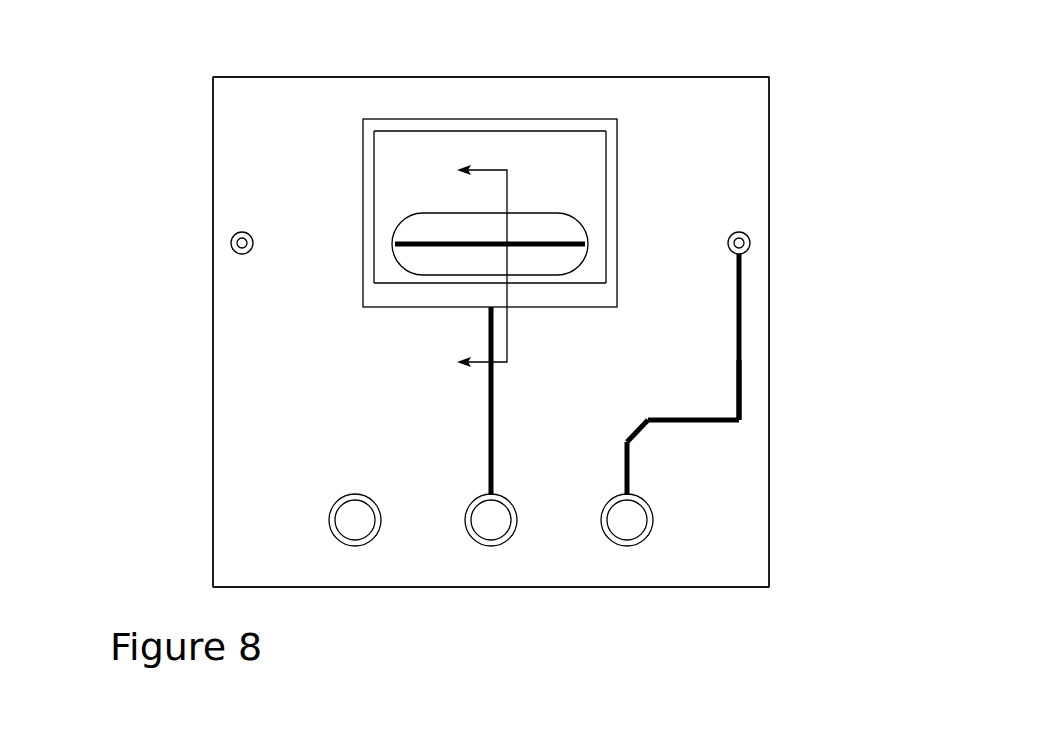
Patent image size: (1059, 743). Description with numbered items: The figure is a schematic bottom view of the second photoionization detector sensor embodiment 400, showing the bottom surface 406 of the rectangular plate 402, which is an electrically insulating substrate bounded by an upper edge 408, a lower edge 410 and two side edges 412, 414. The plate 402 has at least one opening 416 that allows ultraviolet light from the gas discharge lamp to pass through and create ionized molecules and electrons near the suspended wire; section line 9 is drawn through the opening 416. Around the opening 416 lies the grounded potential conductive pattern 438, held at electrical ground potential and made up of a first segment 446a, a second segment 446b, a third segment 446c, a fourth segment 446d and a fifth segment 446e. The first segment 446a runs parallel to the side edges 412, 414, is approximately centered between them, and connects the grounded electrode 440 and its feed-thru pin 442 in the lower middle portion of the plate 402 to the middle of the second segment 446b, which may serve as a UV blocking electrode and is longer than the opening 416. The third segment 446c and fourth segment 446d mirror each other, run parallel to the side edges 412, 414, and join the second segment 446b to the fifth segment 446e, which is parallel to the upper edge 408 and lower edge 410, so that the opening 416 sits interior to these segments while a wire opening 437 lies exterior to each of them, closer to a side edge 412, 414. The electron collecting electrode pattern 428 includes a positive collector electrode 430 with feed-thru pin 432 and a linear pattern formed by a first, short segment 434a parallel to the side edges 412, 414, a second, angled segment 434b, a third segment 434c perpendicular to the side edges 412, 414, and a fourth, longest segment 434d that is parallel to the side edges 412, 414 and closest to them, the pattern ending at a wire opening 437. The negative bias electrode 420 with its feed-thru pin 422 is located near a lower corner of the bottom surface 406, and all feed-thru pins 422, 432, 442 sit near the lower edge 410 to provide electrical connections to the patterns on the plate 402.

The PID sensor 400 is at (91, 104).
The plate 402 is at (308, 75).
The bottom surface 406 is at (700, 92).
The upper edge 408 is at (622, 77).
The lower edge 410 is at (728, 587).
The side edge 412 is at (769, 125).
The side edge 414 is at (213, 465).
The opening 416 is at (428, 212).
The negative bias electrode 420 is at (332, 533).
The feed-thru pin 422 is at (352, 527).
The electron collecting electrode pattern 428 is at (747, 303).
The positive collector electrode 430 is at (630, 545).
The feed-thru pin 432 is at (630, 522).
The first segment 434a is at (625, 480).
The second segment 434b is at (636, 433).
The third segment 434c is at (710, 423).
The fourth segment 434d is at (742, 368).
The wire opening 437 is at (231, 243).
The grounded potential conductive pattern 438 is at (357, 300).
The grounded electrode 440 is at (478, 545).
The feed-thru pin 442 is at (497, 527).
The first segment 446a is at (489, 447).
The second segment 446b is at (425, 307).
The third segment 446c is at (363, 224).
The fourth segment 446d is at (617, 181).
The fifth segment 446e is at (493, 119).
The section line 9- 9 is at (473, 266).